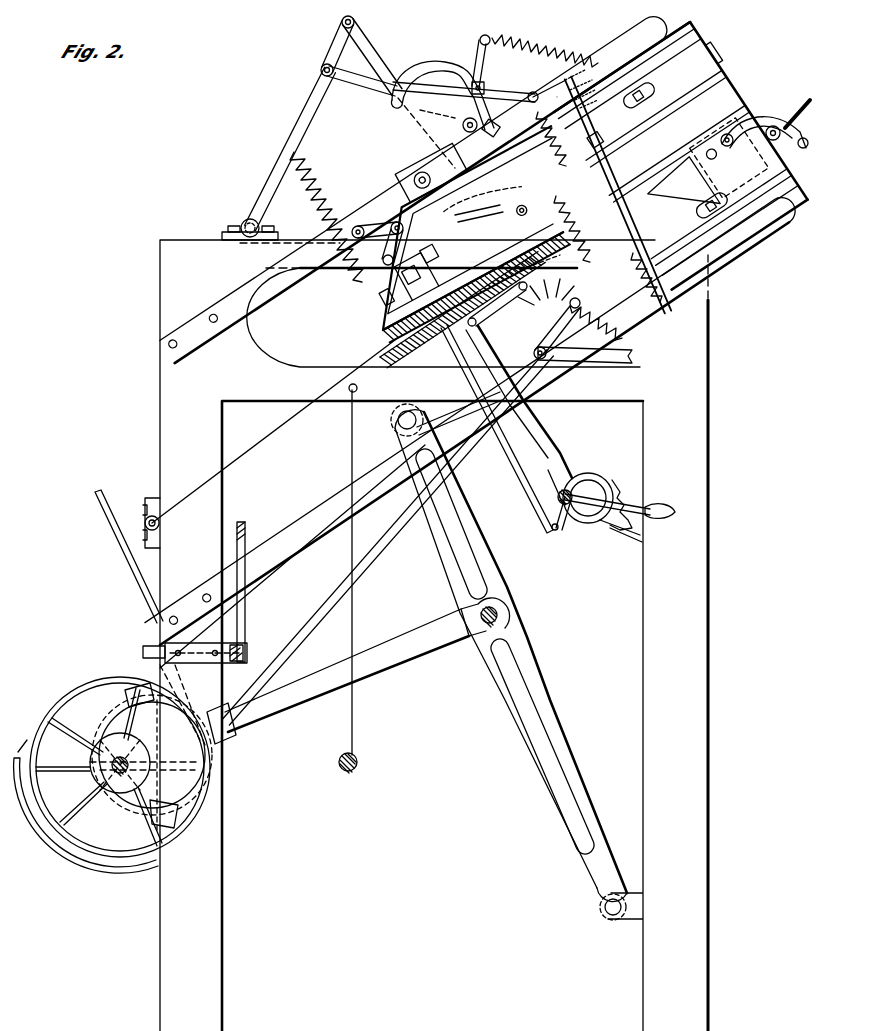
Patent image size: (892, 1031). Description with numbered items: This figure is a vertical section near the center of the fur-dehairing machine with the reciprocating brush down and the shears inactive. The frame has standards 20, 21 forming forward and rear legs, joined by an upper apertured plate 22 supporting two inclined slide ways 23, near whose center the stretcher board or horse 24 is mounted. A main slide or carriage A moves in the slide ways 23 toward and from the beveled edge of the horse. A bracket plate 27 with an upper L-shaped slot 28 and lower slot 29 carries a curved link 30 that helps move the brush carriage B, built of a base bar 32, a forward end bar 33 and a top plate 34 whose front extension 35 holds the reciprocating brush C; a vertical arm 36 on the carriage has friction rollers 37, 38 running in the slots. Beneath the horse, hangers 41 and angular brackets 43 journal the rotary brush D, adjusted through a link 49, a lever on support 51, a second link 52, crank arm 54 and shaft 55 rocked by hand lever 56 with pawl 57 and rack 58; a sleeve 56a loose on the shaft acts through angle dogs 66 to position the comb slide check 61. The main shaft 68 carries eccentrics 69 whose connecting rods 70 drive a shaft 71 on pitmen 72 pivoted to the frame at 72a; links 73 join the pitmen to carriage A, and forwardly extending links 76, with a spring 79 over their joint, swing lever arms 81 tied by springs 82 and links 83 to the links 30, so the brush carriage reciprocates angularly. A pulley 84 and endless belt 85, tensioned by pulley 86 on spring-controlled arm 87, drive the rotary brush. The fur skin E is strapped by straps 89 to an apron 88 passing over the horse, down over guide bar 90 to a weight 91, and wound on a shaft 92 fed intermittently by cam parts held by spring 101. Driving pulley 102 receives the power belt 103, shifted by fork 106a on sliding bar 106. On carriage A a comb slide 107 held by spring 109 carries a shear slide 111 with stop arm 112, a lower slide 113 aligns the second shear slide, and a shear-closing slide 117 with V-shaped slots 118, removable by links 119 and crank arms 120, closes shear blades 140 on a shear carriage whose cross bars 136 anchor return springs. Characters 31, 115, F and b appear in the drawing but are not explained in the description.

The standards 20 is at (434, 635).
The standards 21 is at (450, 716).
The upper apertured plate 22 is at (443, 331).
The slide ways 23 is at (472, 322).
The stretcher board or horse 24 is at (505, 245).
The bracket plate 27 is at (462, 126).
The upper L-shaped slot 28 is at (462, 72).
The lower slot 29 is at (520, 180).
The link 30 is at (406, 198).
The stop 31 is at (401, 305).
The base board or bar 32 is at (421, 285).
The forward upright end bar 33 is at (380, 314).
The top bar or plate 34 is at (426, 218).
The front extension of the brush carriages 35 is at (558, 197).
The vertical arm 36 is at (498, 112).
The friction roller 37 is at (501, 215).
The friction roller 38 is at (437, 107).
The hangers 41 is at (515, 304).
The bracket 43 is at (527, 284).
The link 49 is at (510, 328).
The support 51 is at (519, 402).
The second link 52 is at (515, 483).
The crank arm 54 is at (555, 493).
The shaft 55 is at (547, 481).
The hand lever 56 is at (600, 474).
The sleeve 56a is at (578, 514).
The pawl 57 is at (632, 528).
The rack 58 is at (628, 490).
The comb slide check or stop 61 is at (479, 222).
The angle dog 66 is at (375, 235).
The main or driving shaft 68 is at (128, 760).
The eccentrics 69 is at (200, 765).
The connecting rod 70 is at (338, 676).
The shaft 71 is at (499, 615).
The pitmen 72 is at (550, 674).
The pitman pivot 72a is at (604, 912).
The link 73 is at (423, 413).
The forwardly extending link 76 is at (508, 80).
The spring 79 is at (535, 58).
The lever arms 81 is at (302, 120).
The springs 82 is at (325, 190).
The link 83 is at (380, 50).
The pulley 84 is at (97, 779).
The endless belt 85 is at (429, 383).
The tension pulley 86 is at (578, 328).
The spring-controlled arm 87 is at (540, 330).
The apron 88 is at (281, 430).
The straps 89 is at (372, 360).
The guide bar 90 is at (358, 388).
The weight 91 is at (357, 762).
The shaft 92 is at (160, 524).
The spring 101 is at (527, 145).
The driving pulley 102 is at (120, 765).
The belt 103 is at (118, 552).
The sliding bar 106 is at (262, 612).
The shifting fork 106a is at (140, 652).
The comb slide 107 is at (692, 71).
The spring 109 is at (724, 52).
The shear slide 111 is at (615, 115).
The arm 112 is at (652, 101).
The slide 113 is at (748, 180).
The brush 115 is at (584, 84).
The shear closing slide 117 is at (729, 101).
The V-shaped slots 118 is at (695, 163).
The links 119 is at (750, 118).
The crank arms 120 is at (775, 124).
The cross bars 136 is at (668, 322).
The shear blades 140 is at (583, 229).
The main slide A is at (680, 151).
The brush carriage or frame B is at (362, 296).
The reciprocating brush C is at (568, 258).
The rotary brush D is at (518, 292).
The fur skin E is at (385, 350).
The holder F is at (567, 209).
The point b is at (287, 595).